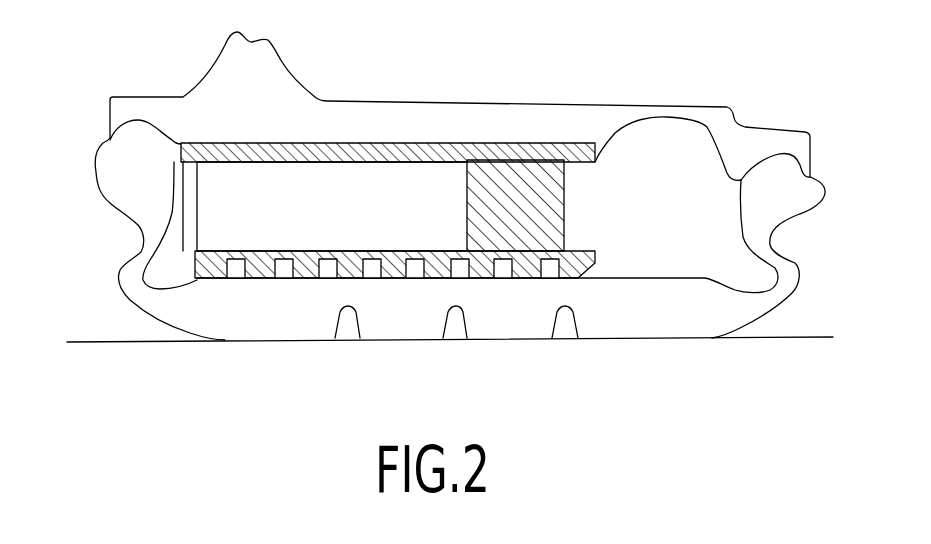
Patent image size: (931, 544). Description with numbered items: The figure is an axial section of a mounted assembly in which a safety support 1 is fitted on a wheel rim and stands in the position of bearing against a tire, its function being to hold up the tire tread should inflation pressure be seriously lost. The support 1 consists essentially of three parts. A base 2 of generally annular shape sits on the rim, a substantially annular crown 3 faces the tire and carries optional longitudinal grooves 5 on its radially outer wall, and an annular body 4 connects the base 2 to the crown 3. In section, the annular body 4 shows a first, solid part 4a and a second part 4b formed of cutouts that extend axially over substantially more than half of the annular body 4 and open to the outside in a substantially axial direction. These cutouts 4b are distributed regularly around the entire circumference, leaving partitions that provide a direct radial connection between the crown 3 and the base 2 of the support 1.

The support 1 is at (258, 228).
The base 2 is at (343, 143).
The crown 3 is at (337, 280).
The annular body 4 is at (515, 149).
The solid part of the annular body 4a is at (508, 229).
The cutouts 4b is at (385, 229).
The longitudinal grooves 5 is at (408, 258).